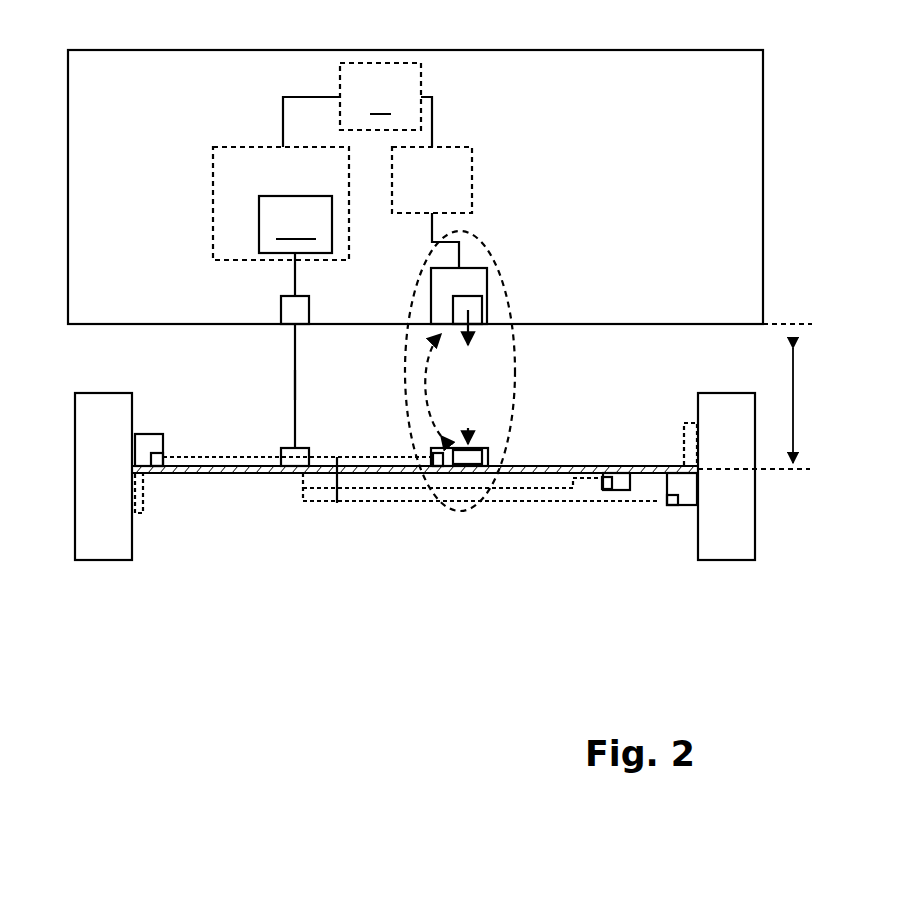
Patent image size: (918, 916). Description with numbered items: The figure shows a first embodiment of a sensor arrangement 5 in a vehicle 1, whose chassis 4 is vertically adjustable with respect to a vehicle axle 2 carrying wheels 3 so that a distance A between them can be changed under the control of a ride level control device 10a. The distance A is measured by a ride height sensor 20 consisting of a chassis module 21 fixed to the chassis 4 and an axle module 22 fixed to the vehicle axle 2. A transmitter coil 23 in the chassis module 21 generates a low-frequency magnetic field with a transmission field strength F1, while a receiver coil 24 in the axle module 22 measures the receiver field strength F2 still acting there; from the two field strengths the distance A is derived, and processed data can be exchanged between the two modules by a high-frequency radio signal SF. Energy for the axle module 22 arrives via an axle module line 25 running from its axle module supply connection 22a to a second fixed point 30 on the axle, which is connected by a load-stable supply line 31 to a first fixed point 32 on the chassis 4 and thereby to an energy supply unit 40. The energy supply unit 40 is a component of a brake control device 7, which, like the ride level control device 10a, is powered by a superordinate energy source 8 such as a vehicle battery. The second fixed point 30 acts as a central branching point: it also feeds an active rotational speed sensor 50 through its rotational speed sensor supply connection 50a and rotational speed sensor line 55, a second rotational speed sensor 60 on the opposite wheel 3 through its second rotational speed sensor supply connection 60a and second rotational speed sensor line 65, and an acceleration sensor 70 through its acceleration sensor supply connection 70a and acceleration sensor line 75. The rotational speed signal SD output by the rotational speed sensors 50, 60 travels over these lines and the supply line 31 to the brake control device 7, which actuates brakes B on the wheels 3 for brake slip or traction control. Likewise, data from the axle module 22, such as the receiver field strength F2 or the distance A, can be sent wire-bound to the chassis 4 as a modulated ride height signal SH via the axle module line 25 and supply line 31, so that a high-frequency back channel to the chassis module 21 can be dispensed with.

The vehicle 1 is at (198, 613).
The vehicle axle 2 is at (417, 473).
The wheel 3 is at (105, 560).
The chassis 4 is at (763, 187).
The sensor arrangement 5 is at (428, 633).
The brake control device 7 is at (213, 203).
The superordinate energy source 8 is at (380, 96).
The ride level control device 10a is at (472, 181).
The ride height sensor 20 is at (500, 275).
The chassis module 21 is at (431, 298).
The axle module 22 is at (460, 467).
The axle module supply connection 22a is at (435, 473).
The transmitter coil 23 is at (487, 311).
The receiver coil 24 is at (488, 453).
The axle module line 25 is at (337, 503).
The second fixed point 30 is at (295, 473).
The supply line 31 is at (295, 387).
The first fixed point 32 is at (280, 312).
The energy supply unit 40 is at (295, 224).
The rotational speed sensor 50 is at (150, 434).
The rotational speed sensor supply connection 50a is at (157, 470).
The rotational speed sensor line 55 is at (225, 457).
The second rotational speed sensor 60 is at (678, 505).
The second rotational speed sensor supply connection 60a is at (673, 477).
The second rotational speed sensor line 65 is at (655, 497).
The acceleration sensor 70 is at (630, 480).
The acceleration sensor supply connection 70a is at (609, 490).
The acceleration sensor line 75 is at (573, 487).
The distance A is at (761, 408).
The brakes B is at (135, 513).
The rotational speed signal SD is at (238, 452).
The radio signal SF is at (425, 391).
The ride height signal SH is at (387, 457).
The transmission field strength F1 is at (478, 332).
The receiver field strength F2 is at (476, 430).